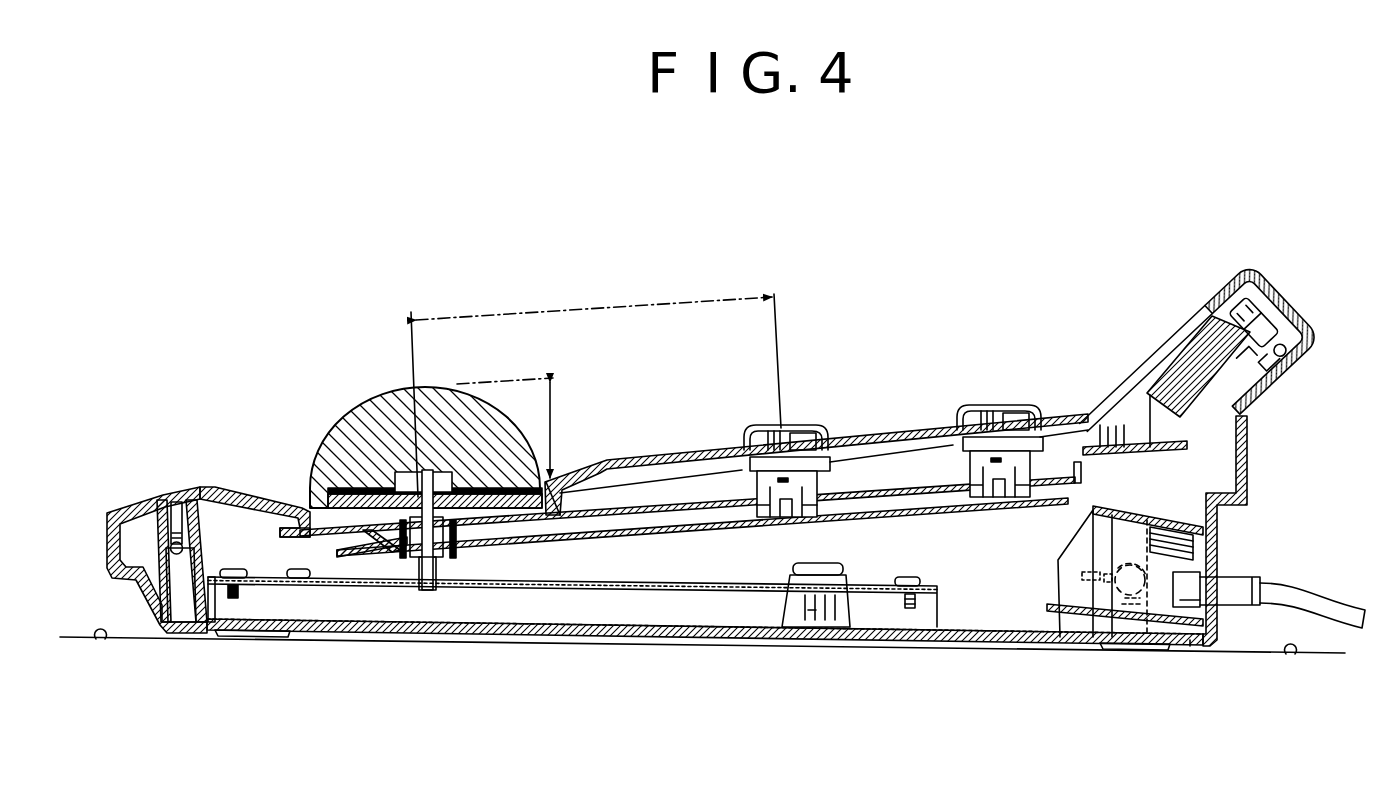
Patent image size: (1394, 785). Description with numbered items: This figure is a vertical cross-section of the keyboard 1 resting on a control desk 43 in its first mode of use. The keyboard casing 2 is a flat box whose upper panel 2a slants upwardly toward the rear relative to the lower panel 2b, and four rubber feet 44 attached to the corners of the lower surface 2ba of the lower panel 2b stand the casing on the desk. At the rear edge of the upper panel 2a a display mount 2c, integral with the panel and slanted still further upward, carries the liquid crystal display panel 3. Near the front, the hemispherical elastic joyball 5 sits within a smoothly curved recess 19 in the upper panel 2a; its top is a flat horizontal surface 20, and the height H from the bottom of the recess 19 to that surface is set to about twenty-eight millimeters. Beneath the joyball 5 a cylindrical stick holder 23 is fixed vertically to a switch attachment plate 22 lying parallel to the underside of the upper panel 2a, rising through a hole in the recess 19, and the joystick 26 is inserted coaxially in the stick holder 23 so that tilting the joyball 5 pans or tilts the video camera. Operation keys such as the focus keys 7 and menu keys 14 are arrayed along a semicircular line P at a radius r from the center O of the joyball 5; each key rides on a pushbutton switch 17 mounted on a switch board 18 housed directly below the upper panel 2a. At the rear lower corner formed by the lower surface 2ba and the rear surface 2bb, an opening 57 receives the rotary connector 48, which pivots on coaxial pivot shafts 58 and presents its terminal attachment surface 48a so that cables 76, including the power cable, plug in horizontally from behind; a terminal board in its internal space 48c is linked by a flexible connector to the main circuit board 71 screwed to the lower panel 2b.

The keyboard 1 is at (176, 481).
The keyboard casing 2 is at (149, 493).
The upper panel 2a is at (204, 488).
The lower panel 2b is at (968, 643).
The lower surface 2ba is at (1035, 642).
The rear surface 2bb is at (1218, 514).
The display mount 2c is at (1218, 298).
The liquid crystal display panel 3 is at (1166, 367).
The joyball 5 is at (497, 392).
The focus keys 7 is at (797, 426).
The menu keys 14 is at (1000, 406).
The pushbutton switches 17 is at (832, 472).
The switch board 18 is at (925, 521).
The recess 19 is at (270, 492).
The flat horizontal surface 20 is at (437, 388).
The switch attachment plate 22 is at (698, 515).
The stick holder 23 is at (427, 562).
The joystick 26 is at (397, 522).
The control desk 43 is at (103, 641).
The feet 44 is at (243, 641).
The rotary connector 48 is at (1230, 545).
The terminal attachment surface 48a is at (1212, 566).
The internal space 48c is at (1128, 535).
The opening 57 is at (1220, 531).
The pivot shafts 58 is at (1192, 650).
The main circuit board 71 is at (700, 629).
The cables 76 is at (1361, 627).
The center of the joyball O is at (410, 318).
The semicircular line P is at (785, 297).
The radius r is at (598, 310).
The height H is at (550, 416).